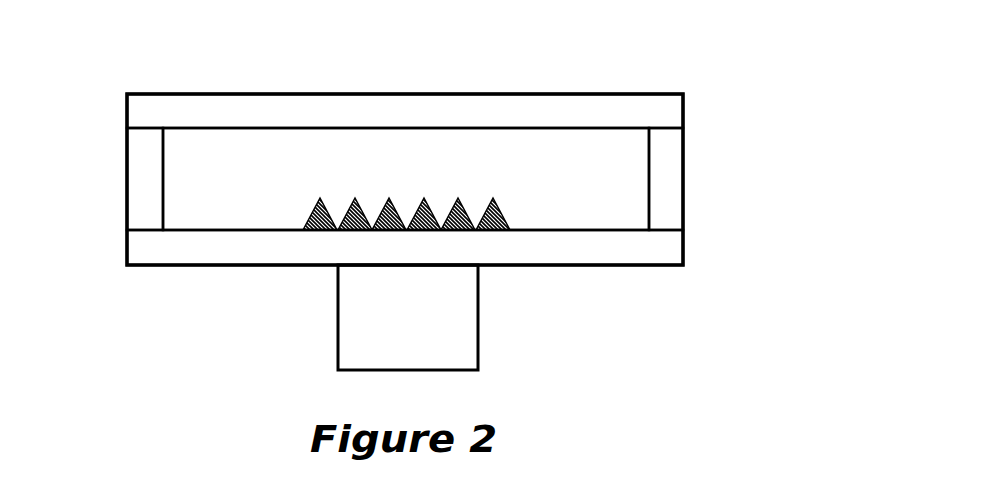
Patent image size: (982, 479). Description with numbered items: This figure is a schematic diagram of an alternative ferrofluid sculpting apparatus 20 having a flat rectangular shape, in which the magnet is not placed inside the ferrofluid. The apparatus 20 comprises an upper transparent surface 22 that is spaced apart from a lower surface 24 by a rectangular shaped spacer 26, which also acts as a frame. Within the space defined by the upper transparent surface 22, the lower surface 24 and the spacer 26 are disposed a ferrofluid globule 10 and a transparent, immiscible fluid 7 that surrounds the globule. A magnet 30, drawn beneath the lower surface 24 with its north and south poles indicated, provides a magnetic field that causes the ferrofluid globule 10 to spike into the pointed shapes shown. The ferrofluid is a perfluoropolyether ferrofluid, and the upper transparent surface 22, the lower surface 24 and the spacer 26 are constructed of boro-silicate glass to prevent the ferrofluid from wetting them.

The apparatus 20 is at (509, 179).
The upper transparent surface 22 is at (405, 85).
The lower surface 24 is at (474, 252).
The rectangular shaped spacer 26 is at (389, 170).
The transparent immiscible fluid 7 is at (202, 178).
The ferrofluid globule 10 is at (418, 189).
The magnet 30 is at (478, 317).